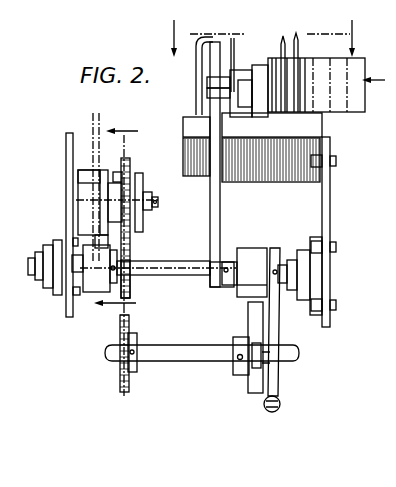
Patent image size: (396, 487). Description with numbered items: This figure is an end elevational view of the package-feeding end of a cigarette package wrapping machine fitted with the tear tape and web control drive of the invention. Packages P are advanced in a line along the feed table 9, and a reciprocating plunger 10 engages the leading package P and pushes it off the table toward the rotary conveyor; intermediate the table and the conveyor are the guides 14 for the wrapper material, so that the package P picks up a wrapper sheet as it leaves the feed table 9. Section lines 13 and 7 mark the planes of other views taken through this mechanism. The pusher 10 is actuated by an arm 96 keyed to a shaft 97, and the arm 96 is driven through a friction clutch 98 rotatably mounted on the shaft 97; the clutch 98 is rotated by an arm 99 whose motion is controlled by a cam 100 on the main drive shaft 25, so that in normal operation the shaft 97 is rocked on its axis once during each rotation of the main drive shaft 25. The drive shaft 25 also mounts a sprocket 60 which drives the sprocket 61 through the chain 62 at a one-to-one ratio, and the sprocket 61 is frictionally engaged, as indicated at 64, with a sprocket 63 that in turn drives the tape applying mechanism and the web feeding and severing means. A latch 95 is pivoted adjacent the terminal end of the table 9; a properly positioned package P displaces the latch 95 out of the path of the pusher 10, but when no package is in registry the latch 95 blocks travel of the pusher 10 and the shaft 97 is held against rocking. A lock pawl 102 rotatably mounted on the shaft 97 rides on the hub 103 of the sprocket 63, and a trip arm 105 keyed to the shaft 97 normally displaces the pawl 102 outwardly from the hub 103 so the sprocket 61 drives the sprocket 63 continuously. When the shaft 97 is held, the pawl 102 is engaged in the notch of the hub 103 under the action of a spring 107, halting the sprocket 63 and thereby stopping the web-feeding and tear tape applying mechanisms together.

The feed table 9 is at (318, 116).
The reciprocating plunger 10 is at (260, 98).
The section line 13- 13 is at (267, 37).
The guides 14 is at (296, 40).
The package P is at (366, 74).
The latch 95 is at (228, 78).
The arm 96 is at (210, 208).
The shaft 97 is at (190, 268).
The friction clutch 98 is at (251, 248).
The arm 99 is at (280, 338).
The cam 100 is at (248, 383).
The main drive shaft 25 is at (190, 346).
The sprocket 60 is at (120, 377).
The sprocket 61 is at (131, 165).
The chain 62 is at (128, 299).
The sprocket 63 is at (93, 165).
The friction element 64 is at (118, 172).
The section line 7- 7 is at (124, 220).
The lock pawl 102 is at (108, 240).
The hub 103 is at (88, 208).
The trip arm 105 is at (117, 251).
The spring 107 is at (72, 227).